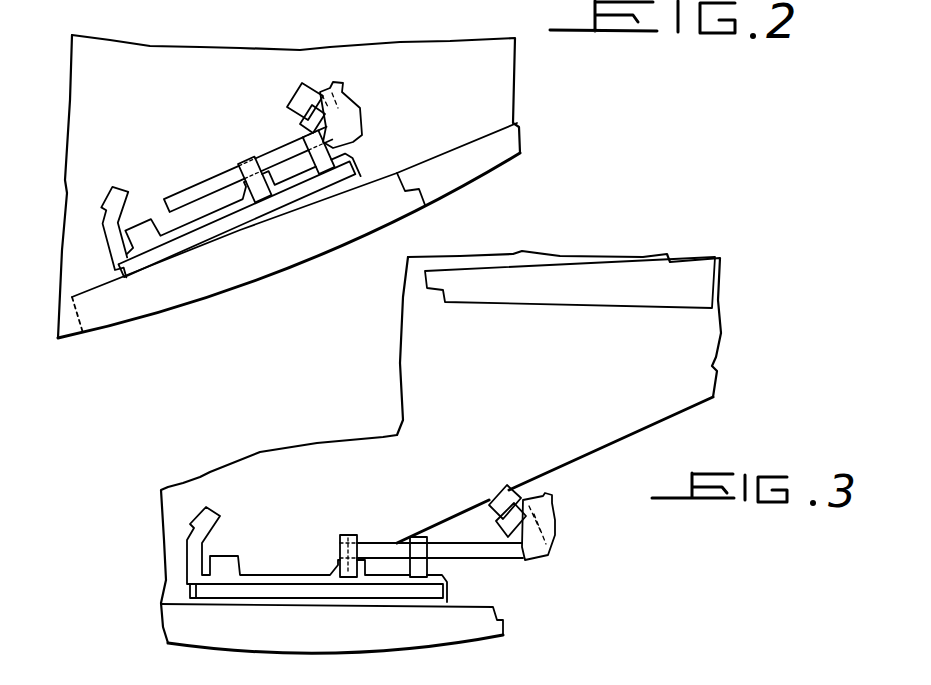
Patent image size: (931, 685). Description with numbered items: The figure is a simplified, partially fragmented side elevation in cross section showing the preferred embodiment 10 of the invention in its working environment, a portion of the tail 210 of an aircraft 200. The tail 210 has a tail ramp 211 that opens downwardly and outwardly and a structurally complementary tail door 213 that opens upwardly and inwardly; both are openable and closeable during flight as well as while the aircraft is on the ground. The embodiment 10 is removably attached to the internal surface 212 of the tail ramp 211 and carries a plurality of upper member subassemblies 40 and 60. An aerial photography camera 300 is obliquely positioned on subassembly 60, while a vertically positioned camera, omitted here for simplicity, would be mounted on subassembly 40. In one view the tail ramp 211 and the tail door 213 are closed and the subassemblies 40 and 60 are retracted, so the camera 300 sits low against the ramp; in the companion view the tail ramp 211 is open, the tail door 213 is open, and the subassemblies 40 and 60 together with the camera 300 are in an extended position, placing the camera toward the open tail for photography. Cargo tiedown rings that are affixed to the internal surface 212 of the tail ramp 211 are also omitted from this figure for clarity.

In FIG. 2, the preferred embodiment 10 is at (205, 143).
In FIG. 3, the preferred embodiment 10 is at (322, 557).
In FIG. 2, the upper member subassembly 40 is at (273, 153).
In FIG. 3, the upper member subassembly 40 is at (377, 532).
In FIG. 2, the upper member subassembly 60 is at (183, 188).
In FIG. 3, the upper member subassembly 60 is at (462, 537).
In FIG. 2, the aircraft 200 is at (242, 45).
In FIG. 3, the aircraft 200 is at (383, 428).
In FIG. 2, the tail 210 is at (479, 94).
In FIG. 3, the tail 210 is at (688, 367).
In FIG. 2, the tail ramp 211 is at (218, 288).
In FIG. 3, the tail ramp 211 is at (233, 652).
In FIG. 2, the internal surface 212 is at (247, 225).
In FIG. 3, the internal surface 212 is at (367, 600).
In FIG. 2, the tail door 213 is at (481, 173).
In FIG. 3, the tail door 213 is at (660, 285).
In FIG. 2, the aerial photography camera 300 is at (287, 100).
In FIG. 3, the aerial photography camera 300 is at (497, 494).